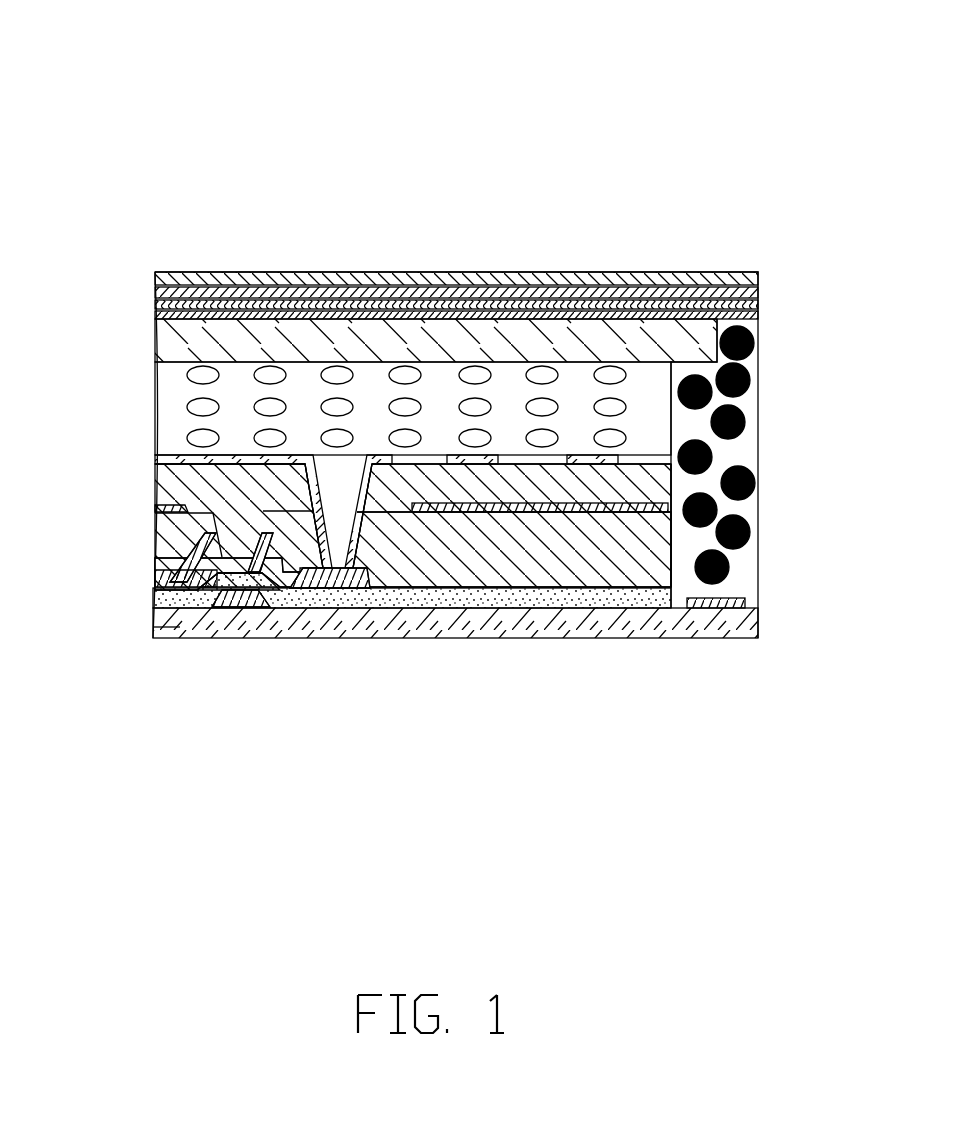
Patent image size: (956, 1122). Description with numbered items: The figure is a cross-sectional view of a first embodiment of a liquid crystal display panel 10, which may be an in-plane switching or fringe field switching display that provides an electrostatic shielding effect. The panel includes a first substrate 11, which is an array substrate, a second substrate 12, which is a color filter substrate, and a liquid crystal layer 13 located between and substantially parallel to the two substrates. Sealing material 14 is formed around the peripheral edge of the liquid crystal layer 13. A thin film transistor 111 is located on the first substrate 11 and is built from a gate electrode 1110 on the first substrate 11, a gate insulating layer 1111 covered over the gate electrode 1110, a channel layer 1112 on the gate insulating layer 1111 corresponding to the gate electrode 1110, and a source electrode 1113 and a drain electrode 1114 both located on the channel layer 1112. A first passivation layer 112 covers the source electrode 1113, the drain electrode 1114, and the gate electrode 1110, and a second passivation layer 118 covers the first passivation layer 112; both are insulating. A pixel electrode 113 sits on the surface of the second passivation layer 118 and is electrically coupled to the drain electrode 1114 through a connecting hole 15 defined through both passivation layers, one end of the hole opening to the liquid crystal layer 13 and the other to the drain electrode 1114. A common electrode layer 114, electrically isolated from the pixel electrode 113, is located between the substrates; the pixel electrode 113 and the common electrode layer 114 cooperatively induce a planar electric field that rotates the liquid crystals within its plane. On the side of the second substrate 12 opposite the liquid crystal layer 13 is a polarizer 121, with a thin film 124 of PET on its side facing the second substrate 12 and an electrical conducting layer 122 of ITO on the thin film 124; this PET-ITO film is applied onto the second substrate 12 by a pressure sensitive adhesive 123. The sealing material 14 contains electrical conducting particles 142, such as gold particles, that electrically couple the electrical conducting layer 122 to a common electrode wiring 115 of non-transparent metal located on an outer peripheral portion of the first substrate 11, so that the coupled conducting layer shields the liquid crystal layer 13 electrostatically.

The liquid crystal display panel 10 is at (410, 77).
The first substrate 11 is at (747, 625).
The second substrate 12 is at (168, 350).
The liquid crystal layer 13 is at (143, 362).
The sealing material 14 is at (740, 452).
The connecting hole 15 is at (345, 505).
The thin film transistor 111 is at (257, 572).
The first passivation layer 112 is at (170, 527).
The pixel electrode 113 is at (155, 460).
The common electrode layer 114 is at (610, 512).
The common electrode wiring 115 is at (733, 597).
The second passivation layer 118 is at (185, 477).
The polarizer 121 is at (173, 275).
The electrical conducting layer 122 is at (155, 304).
The pressure sensitive adhesive 123 is at (155, 316).
The thin film 124 is at (157, 290).
The electrical conducting particles 142 is at (742, 415).
The gate electrode 1110 is at (235, 600).
The gate insulating layer 1111 is at (155, 600).
The channel layer 1112 is at (155, 627).
The source electrode 1113 is at (167, 578).
The drain electrode 1114 is at (327, 563).